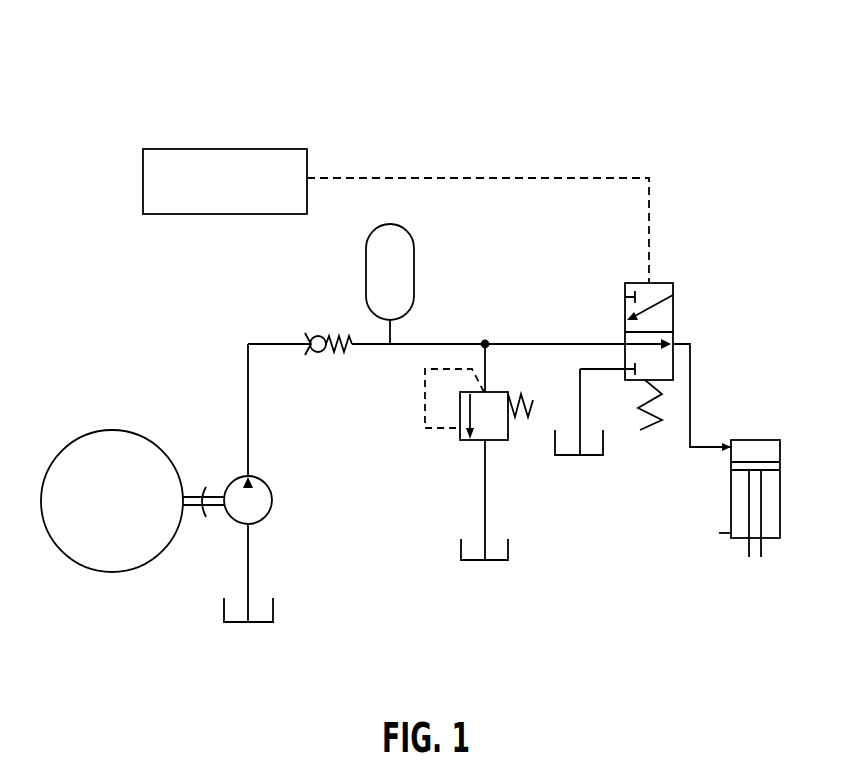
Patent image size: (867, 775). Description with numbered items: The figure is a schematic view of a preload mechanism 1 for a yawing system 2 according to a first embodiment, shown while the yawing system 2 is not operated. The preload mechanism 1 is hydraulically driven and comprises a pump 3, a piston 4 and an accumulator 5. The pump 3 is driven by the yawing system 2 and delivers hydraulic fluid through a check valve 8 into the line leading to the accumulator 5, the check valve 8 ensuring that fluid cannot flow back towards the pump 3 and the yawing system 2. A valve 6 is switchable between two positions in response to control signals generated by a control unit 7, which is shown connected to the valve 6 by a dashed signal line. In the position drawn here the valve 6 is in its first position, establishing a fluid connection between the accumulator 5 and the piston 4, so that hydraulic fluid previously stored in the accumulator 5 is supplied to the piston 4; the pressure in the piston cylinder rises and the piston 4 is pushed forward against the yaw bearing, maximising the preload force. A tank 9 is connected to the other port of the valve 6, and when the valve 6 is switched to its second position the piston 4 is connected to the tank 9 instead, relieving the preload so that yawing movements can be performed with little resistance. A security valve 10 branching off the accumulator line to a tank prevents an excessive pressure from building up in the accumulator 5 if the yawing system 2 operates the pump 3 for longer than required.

The preload mechanism 1 is at (691, 104).
The yawing system 2 is at (63, 448).
The pump 3 is at (266, 519).
The piston 4 is at (770, 440).
The accumulator 5 is at (414, 268).
The valve 6 is at (673, 318).
The control unit 7 is at (213, 148).
The check valve 8 is at (308, 340).
The tank 9 is at (585, 455).
The security valve 10 is at (468, 440).